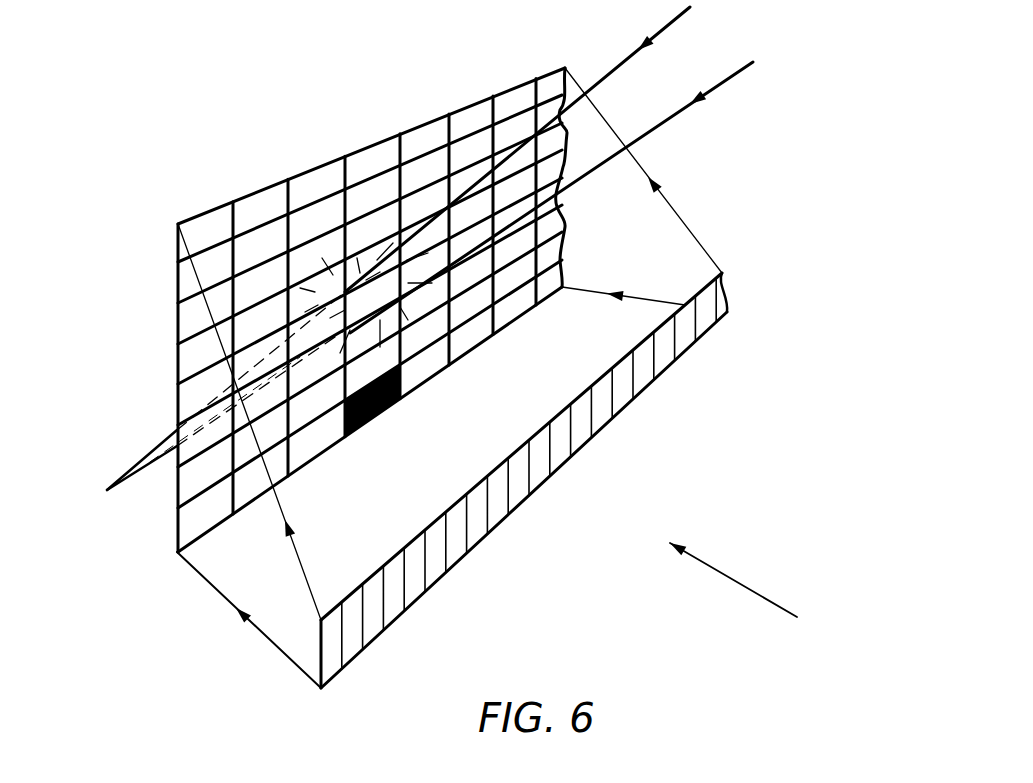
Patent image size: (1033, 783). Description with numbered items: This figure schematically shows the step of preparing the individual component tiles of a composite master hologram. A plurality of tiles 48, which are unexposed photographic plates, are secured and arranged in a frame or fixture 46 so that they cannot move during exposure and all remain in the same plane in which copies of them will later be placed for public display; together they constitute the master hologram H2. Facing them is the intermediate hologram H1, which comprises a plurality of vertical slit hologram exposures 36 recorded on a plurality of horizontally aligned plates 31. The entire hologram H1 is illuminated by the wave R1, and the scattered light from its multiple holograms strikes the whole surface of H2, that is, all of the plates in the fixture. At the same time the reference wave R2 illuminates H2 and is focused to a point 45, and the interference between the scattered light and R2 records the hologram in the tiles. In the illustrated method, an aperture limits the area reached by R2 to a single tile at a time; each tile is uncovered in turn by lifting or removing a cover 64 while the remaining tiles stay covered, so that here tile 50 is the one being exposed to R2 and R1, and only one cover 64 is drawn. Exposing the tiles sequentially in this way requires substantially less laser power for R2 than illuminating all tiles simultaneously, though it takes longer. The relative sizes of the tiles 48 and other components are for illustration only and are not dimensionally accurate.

The horizontally aligned plates 31 is at (640, 383).
The vertical slit hologram exposures 36 is at (516, 450).
The point 45 is at (106, 490).
The frame or fixture 46 is at (185, 220).
The tiles 48 is at (267, 200).
The tile 50 is at (380, 272).
The cover 64 is at (365, 425).
The intermediate hologram H1 is at (377, 638).
The master hologram H2 is at (175, 540).
The reference wave R2 is at (549, 170).
The illuminating wave R1* R1 is at (733, 580).